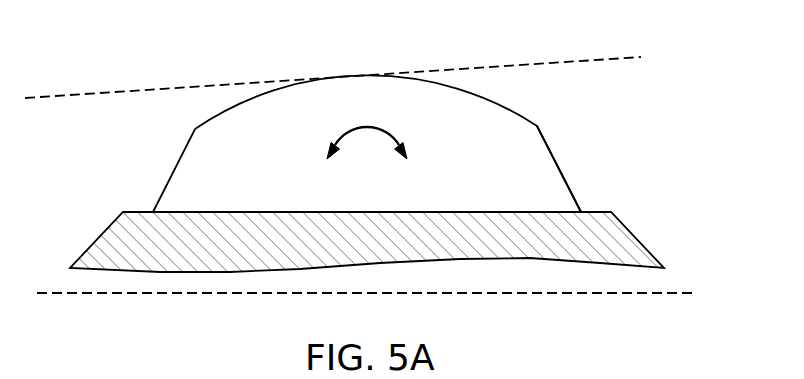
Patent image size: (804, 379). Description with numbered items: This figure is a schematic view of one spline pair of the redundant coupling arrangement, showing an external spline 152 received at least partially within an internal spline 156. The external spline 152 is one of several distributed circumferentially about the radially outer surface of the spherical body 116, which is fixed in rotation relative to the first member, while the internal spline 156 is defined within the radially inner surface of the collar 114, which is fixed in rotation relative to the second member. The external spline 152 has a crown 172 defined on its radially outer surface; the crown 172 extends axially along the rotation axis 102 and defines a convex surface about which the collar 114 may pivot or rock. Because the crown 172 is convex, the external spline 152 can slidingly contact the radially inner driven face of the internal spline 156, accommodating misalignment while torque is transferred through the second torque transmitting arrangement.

The rotation axis 102 is at (102, 293).
The collar 114 is at (353, 50).
The spherical body 116 is at (523, 233).
The external spline 152 is at (530, 184).
The internal spline 156 is at (155, 166).
The crown 172 is at (532, 63).